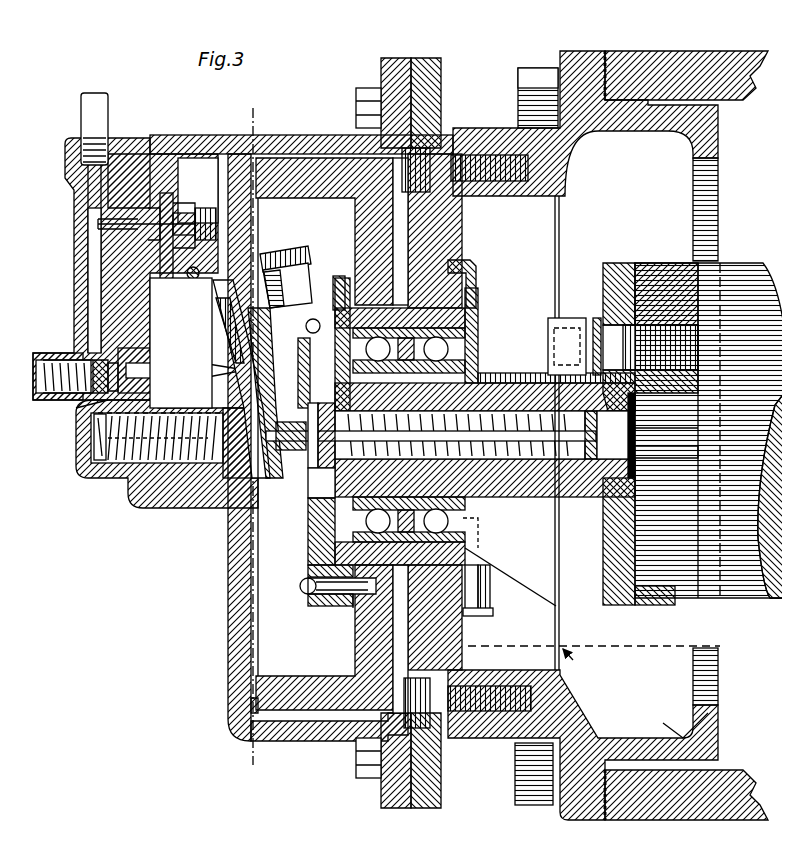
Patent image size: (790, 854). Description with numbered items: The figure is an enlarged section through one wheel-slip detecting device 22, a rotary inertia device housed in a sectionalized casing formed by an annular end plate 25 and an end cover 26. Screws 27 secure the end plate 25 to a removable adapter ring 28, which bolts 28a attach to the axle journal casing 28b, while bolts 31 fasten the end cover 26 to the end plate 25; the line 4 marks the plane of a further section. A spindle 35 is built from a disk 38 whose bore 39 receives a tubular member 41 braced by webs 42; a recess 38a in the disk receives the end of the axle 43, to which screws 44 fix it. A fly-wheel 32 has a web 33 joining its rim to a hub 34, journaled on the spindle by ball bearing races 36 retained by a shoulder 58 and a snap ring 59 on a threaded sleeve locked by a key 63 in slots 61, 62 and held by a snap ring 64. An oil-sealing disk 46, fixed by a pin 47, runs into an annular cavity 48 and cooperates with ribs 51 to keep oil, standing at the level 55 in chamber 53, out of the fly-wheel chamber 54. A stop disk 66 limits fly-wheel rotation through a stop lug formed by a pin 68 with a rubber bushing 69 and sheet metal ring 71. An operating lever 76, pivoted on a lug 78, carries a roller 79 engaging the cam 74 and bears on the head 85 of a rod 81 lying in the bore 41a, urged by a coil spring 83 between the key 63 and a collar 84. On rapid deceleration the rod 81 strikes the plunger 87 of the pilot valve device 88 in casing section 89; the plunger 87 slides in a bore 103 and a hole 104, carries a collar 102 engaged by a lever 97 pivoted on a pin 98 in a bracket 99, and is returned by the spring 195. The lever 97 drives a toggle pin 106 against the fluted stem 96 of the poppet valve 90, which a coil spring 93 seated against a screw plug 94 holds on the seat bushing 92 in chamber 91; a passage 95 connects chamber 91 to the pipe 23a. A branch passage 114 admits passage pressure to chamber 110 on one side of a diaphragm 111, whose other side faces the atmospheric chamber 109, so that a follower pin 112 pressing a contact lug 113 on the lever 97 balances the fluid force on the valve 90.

The section line 4- 4 is at (262, 100).
The wheel slip detecting device 22 is at (416, 56).
The pipe 23a is at (82, 90).
The annular end plate 25 is at (455, 213).
The end cover 26 is at (300, 135).
The screws 27 is at (360, 190).
The adapter ring 28 is at (480, 123).
The bolts 28a is at (512, 74).
The axle journal casing 28b is at (675, 50).
The screws 31 is at (365, 96).
The fly-wheel 32 is at (242, 682).
The web 33 is at (360, 625).
The hub 34 is at (470, 568).
The spindle 35 is at (512, 372).
The ball bearing races 36 is at (300, 562).
The securing disk 38 is at (608, 262).
The circular recess 38a is at (660, 585).
The central bore 39 is at (628, 392).
The tubular member 41 is at (612, 458).
The central bore 41a is at (612, 430).
The supporting webs 42 is at (545, 365).
The axle 43 is at (740, 270).
The screws 44 is at (605, 335).
The oil-sealing disk 46 is at (465, 262).
The pin 47 is at (472, 516).
The annular cavity 48 is at (470, 608).
The annular ribs 51 is at (478, 588).
The chamber 53 is at (690, 720).
The chamber 54 is at (215, 140).
The oil level 55 is at (516, 643).
The annular shoulder 58 is at (457, 491).
The snap ring 59 is at (466, 350).
The slots 61 is at (312, 462).
The slots 62 is at (300, 458).
The key 63 is at (305, 535).
The snap ring 64 is at (305, 485).
The stop disk 66 is at (328, 272).
The pin 68 is at (300, 581).
The rubber bushing 69 is at (300, 594).
The sheet metal ring 71 is at (345, 595).
The arcuate cam 74 is at (268, 420).
The operating lever 76 is at (305, 290).
The lug 78 is at (327, 337).
The roller 79 is at (285, 240).
The rod 81 is at (575, 418).
The coil spring 83 is at (536, 455).
The collar 84 is at (575, 455).
The head 85 is at (272, 442).
The operating plunger 87 is at (100, 428).
The pilot valve device 88 is at (57, 165).
The casing section 89 is at (118, 150).
The poppet valve 90 is at (68, 402).
The chamber 91 is at (88, 355).
The seat bushing 92 is at (103, 356).
The coil spring 93 is at (44, 385).
The screw plug 94 is at (32, 345).
The passage 95 is at (82, 259).
The fluted stem 96 is at (135, 355).
The lever 97 is at (212, 285).
The pin 98 is at (192, 268).
The bracket member 99 is at (181, 343).
The collar 102 is at (165, 452).
The bore 103 is at (108, 468).
The hole 104 is at (220, 452).
The toggle pin 106 is at (210, 358).
The chamber 109 is at (168, 205).
The chamber 110 is at (160, 190).
The flexible diaphragm 111 is at (175, 205).
The follower pin 112 is at (190, 215).
The contact lug 113 is at (208, 212).
The branch passage 114 is at (90, 216).
The spring 195 is at (88, 445).